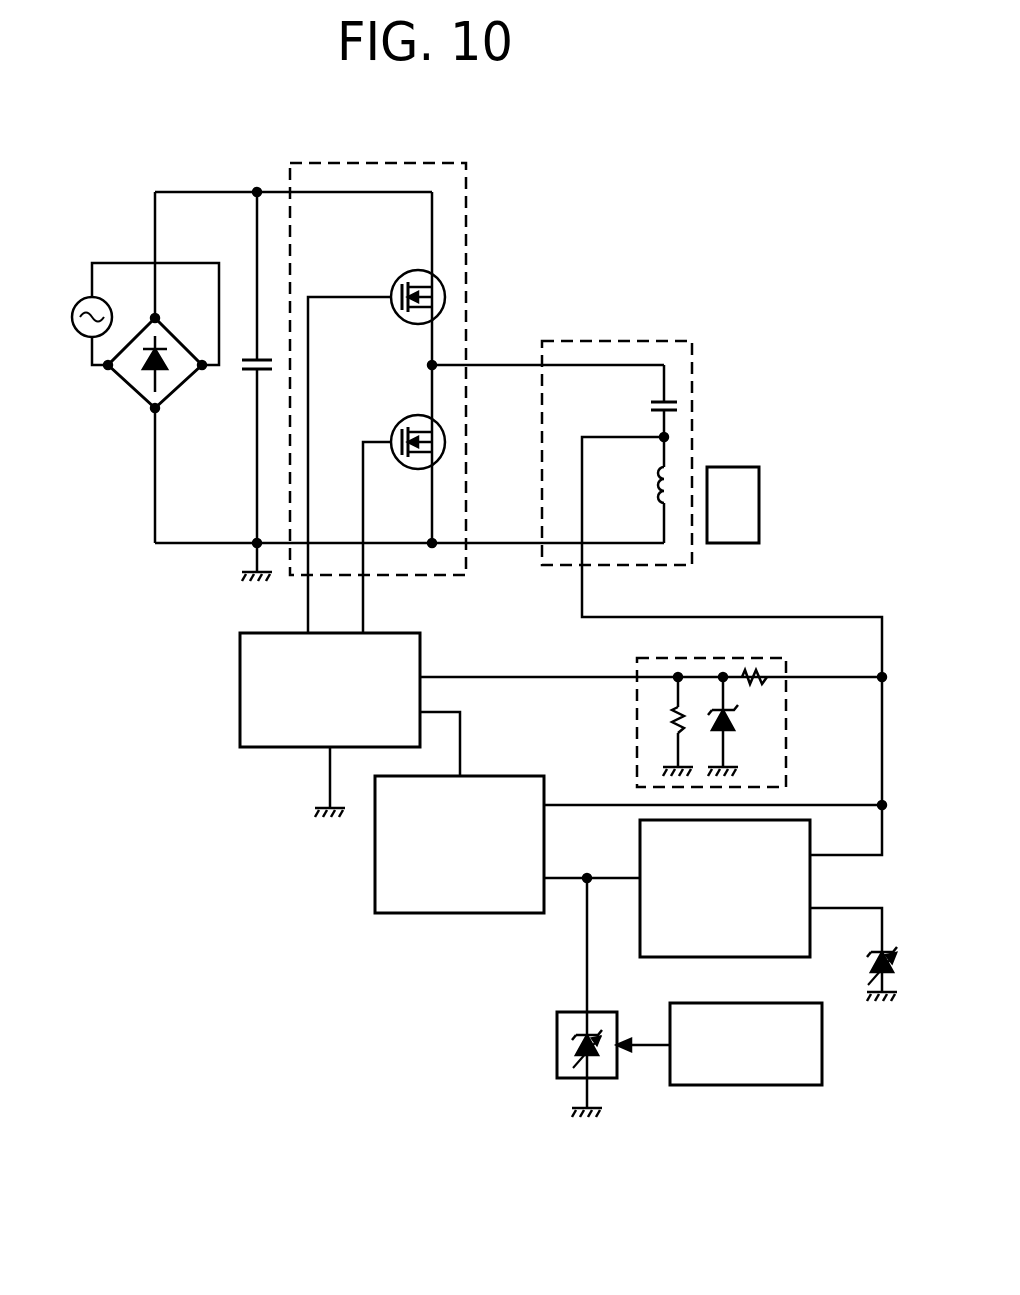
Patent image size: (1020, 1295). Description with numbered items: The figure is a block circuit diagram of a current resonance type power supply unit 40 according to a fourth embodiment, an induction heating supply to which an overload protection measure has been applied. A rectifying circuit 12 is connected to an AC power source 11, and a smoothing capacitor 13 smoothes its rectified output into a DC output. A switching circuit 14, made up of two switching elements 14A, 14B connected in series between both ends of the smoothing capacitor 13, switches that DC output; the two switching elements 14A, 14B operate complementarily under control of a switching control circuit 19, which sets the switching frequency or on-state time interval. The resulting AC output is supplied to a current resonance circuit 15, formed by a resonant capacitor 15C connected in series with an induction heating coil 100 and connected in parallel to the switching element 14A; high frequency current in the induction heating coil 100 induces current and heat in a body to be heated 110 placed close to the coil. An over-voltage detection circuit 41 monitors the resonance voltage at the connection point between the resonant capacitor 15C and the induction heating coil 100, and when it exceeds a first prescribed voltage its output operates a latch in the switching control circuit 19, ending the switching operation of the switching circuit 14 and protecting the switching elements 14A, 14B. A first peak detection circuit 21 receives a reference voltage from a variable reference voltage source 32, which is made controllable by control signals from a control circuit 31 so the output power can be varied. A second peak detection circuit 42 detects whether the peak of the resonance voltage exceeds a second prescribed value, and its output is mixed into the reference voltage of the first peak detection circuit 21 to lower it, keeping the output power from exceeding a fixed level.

The AC power source 11 is at (84, 302).
The rectifying circuit 12 is at (126, 394).
The smoothing capacitor 13 is at (248, 367).
The switching circuit 14 is at (466, 192).
The switching element 14A is at (416, 418).
The switching element 14B is at (416, 272).
The current resonance circuit 15 is at (652, 341).
The resonant capacitor 15C is at (648, 405).
The induction heating coil 100 is at (655, 484).
The body to be heated 110 is at (742, 467).
The switching control circuit 19 is at (240, 678).
The first peak detection circuit 21 is at (421, 913).
The control circuit 31 is at (765, 1088).
The variable reference voltage source 32 is at (557, 1048).
The current resonance type power supply unit 40 is at (197, 935).
The over-voltage detection circuit 41 is at (637, 730).
The second peak detection circuit 42 is at (640, 838).